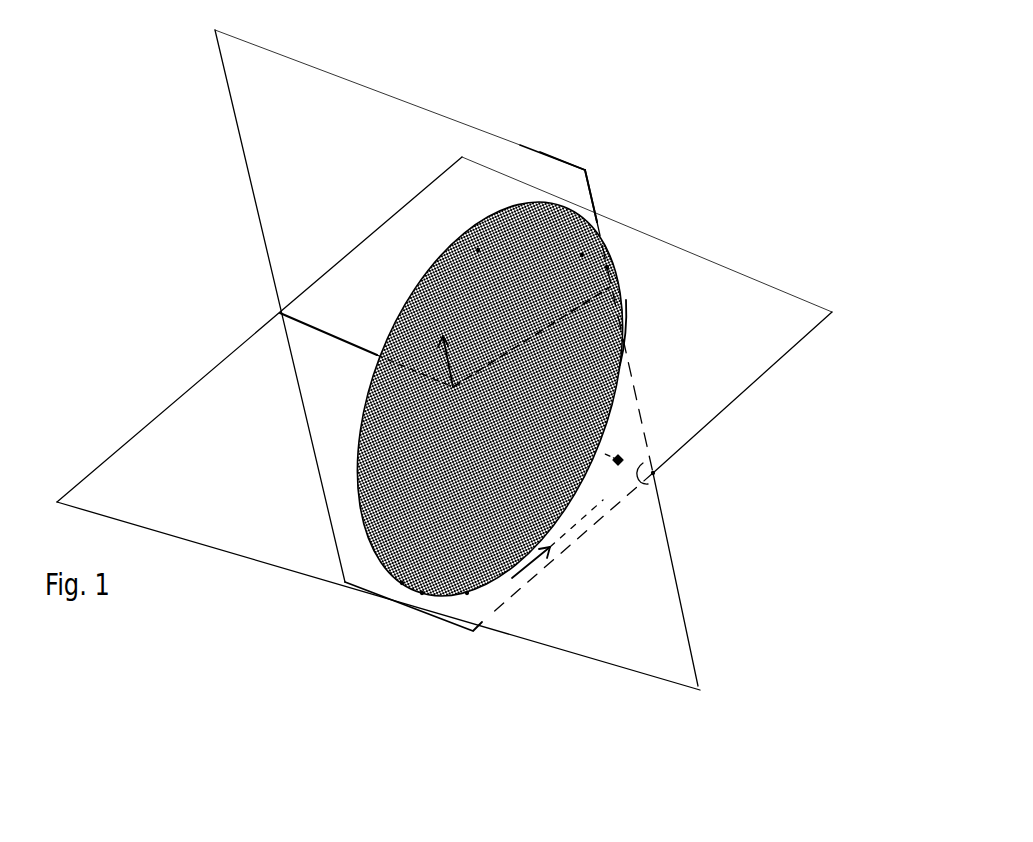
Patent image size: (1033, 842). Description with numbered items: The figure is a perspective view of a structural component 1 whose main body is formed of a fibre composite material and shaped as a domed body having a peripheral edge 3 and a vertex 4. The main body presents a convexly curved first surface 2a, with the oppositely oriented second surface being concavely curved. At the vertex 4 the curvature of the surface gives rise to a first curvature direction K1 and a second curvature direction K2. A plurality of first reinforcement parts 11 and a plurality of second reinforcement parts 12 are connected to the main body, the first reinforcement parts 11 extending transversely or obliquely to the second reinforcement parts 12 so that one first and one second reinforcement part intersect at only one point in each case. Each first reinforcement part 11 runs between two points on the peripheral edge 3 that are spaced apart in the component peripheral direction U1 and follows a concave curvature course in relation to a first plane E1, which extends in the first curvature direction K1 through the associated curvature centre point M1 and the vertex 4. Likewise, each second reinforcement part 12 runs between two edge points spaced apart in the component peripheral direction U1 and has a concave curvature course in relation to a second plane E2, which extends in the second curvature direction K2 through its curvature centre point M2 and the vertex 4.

The structural component 1 is at (740, 219).
The first surface 2a is at (428, 282).
The peripheral edge 3 is at (617, 403).
The vertex 4 is at (370, 393).
The first reinforcement parts 11 is at (402, 583).
The second reinforcement parts 12 is at (478, 250).
The first curvature direction K1 is at (620, 333).
The second curvature direction K2 is at (555, 198).
The first plane E1 is at (777, 352).
The second plane E2 is at (690, 652).
The curvature centre point M1 is at (618, 465).
The curvature centre point M2 is at (642, 482).
The component peripheral direction U1 is at (527, 563).